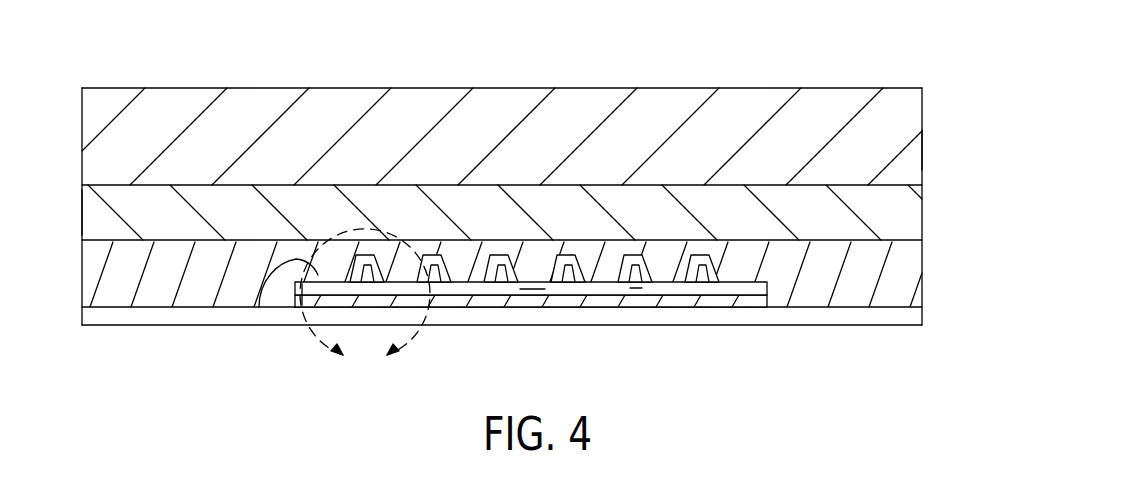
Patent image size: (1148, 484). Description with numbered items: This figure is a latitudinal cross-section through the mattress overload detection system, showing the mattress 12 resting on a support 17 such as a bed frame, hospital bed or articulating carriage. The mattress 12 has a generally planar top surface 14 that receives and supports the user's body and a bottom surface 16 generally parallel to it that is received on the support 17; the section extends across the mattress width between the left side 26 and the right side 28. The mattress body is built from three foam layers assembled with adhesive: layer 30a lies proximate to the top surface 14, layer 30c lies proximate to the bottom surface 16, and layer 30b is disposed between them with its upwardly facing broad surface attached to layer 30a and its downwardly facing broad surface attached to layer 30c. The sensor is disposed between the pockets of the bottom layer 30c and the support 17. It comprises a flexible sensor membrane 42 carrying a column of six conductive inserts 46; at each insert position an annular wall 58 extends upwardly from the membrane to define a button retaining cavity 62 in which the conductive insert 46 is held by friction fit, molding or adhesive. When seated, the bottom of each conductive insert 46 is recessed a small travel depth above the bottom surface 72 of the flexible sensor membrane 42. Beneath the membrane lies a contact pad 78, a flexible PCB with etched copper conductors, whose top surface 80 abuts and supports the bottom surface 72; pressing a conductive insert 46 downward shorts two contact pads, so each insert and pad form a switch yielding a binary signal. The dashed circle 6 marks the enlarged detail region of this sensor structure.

The detail region 6 is at (365, 306).
The mattress 12 is at (840, 88).
The top surface 14 is at (577, 107).
The bottom surface 16 is at (259, 307).
The support 17 is at (152, 315).
The left side 26 is at (82, 211).
The right side 28 is at (923, 148).
The layer 30a is at (740, 107).
The layer 30b is at (828, 217).
The layer 30c is at (880, 285).
The flexible sensor membrane 42 is at (723, 287).
The conductive insert 46 is at (430, 265).
The annular wall 58 is at (641, 270).
The button retaining cavity 62 is at (632, 287).
The bottom surface of the flexible sensor membrane 72 is at (567, 262).
The contact pad 78 is at (748, 302).
The top surface of the contact pad 80 is at (530, 293).